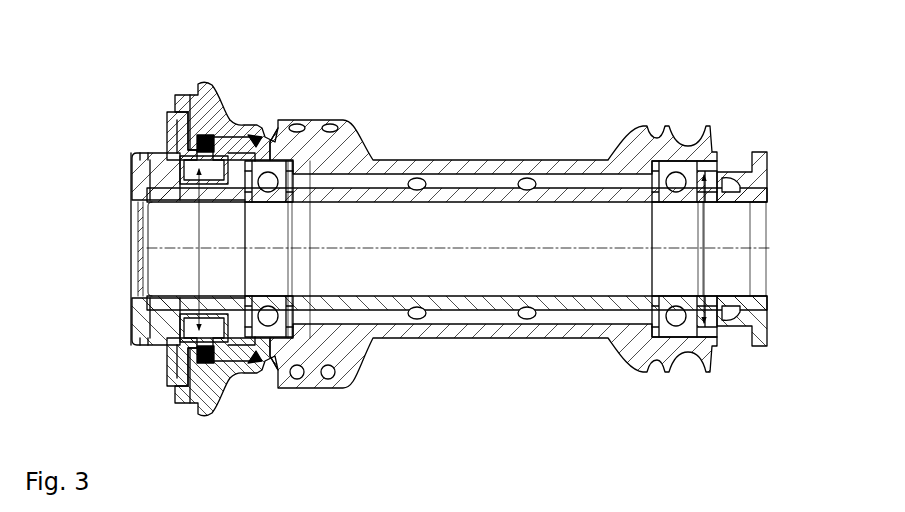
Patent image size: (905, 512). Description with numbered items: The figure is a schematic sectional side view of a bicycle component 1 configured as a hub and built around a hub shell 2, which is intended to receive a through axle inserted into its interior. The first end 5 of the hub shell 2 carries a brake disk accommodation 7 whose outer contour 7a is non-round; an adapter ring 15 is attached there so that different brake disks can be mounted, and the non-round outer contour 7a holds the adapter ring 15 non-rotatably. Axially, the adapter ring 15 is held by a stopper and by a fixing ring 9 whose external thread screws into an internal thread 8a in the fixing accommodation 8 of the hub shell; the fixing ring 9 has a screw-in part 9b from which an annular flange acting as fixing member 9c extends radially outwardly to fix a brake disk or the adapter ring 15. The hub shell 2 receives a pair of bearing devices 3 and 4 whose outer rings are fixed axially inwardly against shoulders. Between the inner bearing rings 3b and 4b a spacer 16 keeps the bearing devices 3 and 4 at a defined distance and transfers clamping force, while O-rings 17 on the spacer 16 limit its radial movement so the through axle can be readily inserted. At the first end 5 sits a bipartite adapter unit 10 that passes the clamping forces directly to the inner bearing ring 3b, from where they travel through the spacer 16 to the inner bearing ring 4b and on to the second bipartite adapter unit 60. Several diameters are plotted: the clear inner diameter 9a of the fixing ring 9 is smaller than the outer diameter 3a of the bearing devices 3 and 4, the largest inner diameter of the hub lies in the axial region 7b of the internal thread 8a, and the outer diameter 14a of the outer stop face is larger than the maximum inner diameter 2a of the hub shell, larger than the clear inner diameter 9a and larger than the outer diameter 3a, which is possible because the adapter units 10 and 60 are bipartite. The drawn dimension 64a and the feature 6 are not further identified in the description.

The bicycle component 1 is at (800, 84).
The hub shell 2 is at (470, 160).
The maximum inner diameter of the hub shell 2a is at (150, 348).
The bearing device 3 is at (283, 118).
The outer diameter of the bearing device 3a is at (762, 153).
The inner bearing ring 3b is at (265, 291).
The bearing device 4 is at (626, 140).
The inner bearing ring 4b is at (677, 312).
The first end 5 is at (189, 80).
The spoke mounting portion 6 is at (697, 114).
The brake disk accommodation 7 is at (243, 93).
The outer contour 7a is at (266, 108).
The axial region 7b is at (187, 435).
The fixing accommodation 8 is at (223, 136).
The internal thread 8a is at (222, 346).
The fixing ring 9 is at (165, 123).
The clear inner diameter 9a is at (200, 237).
The screw-in part 9b is at (246, 210).
The fixing member 9c is at (166, 379).
The adapter unit 10 is at (96, 88).
The outer diameter of the outer stop face 14a is at (110, 159).
The adapter ring 15 is at (176, 94).
The spacer 16 is at (447, 196).
The O-rings 17 is at (532, 308).
The adapter unit 60 is at (778, 128).
The end cap outer diameter 64a is at (787, 334).